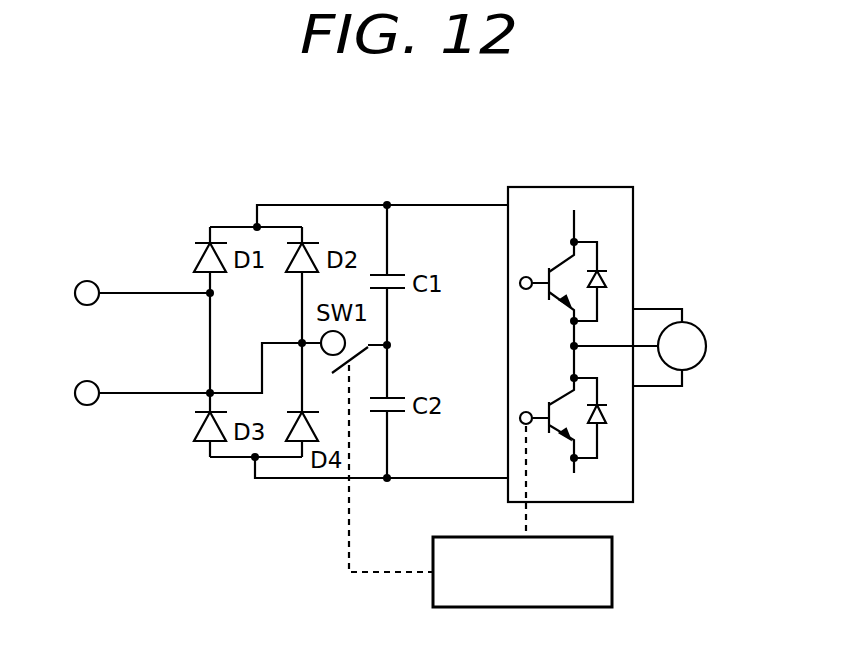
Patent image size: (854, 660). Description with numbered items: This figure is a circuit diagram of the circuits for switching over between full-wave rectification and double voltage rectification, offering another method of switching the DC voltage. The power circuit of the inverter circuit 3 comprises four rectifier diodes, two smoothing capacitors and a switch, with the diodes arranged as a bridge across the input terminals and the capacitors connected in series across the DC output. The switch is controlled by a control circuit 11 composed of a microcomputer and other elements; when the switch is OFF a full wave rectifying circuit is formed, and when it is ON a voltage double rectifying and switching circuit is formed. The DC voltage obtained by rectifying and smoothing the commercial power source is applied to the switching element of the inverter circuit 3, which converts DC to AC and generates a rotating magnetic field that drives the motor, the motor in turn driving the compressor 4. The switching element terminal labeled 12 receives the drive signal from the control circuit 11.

The inverter circuit 3 is at (574, 307).
The compressor 4 is at (693, 322).
The control circuit 11 is at (612, 572).
The switching element base terminal 12 is at (547, 272).